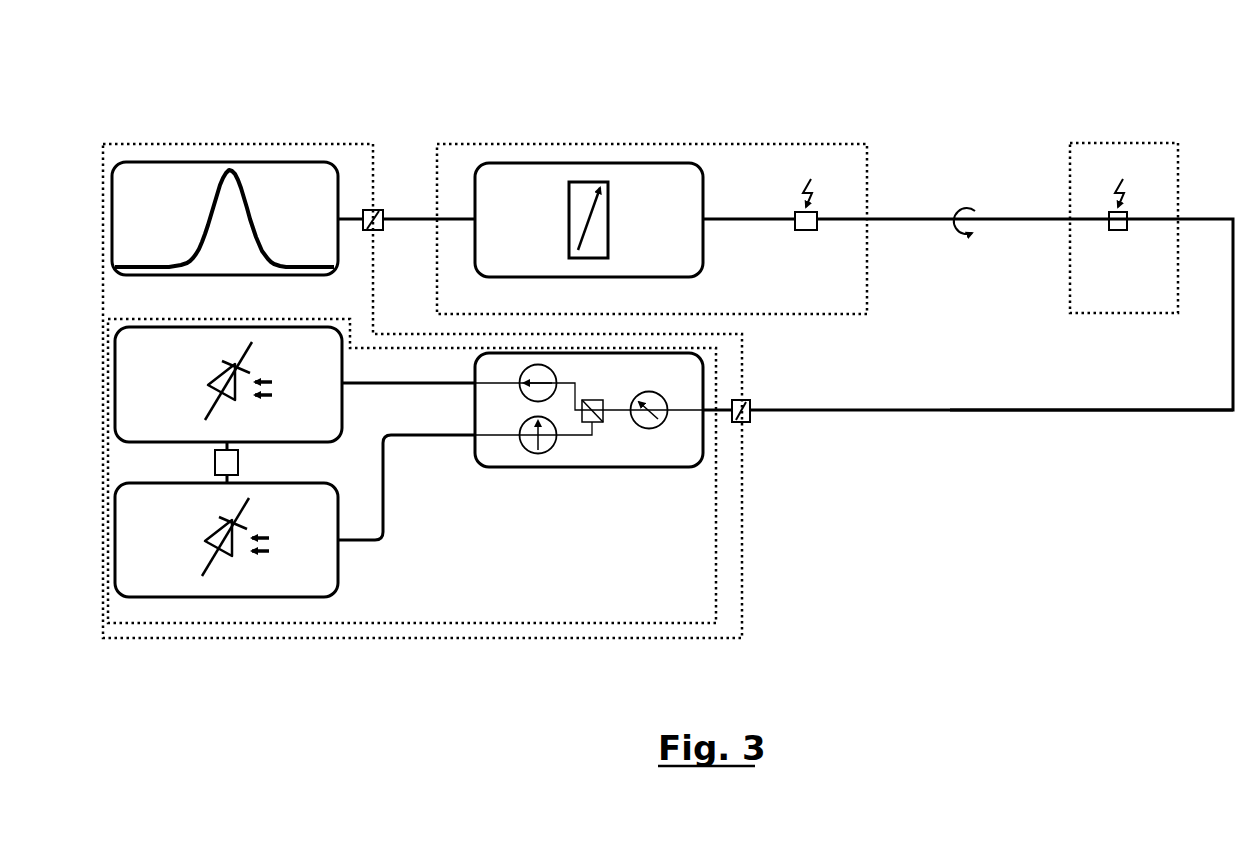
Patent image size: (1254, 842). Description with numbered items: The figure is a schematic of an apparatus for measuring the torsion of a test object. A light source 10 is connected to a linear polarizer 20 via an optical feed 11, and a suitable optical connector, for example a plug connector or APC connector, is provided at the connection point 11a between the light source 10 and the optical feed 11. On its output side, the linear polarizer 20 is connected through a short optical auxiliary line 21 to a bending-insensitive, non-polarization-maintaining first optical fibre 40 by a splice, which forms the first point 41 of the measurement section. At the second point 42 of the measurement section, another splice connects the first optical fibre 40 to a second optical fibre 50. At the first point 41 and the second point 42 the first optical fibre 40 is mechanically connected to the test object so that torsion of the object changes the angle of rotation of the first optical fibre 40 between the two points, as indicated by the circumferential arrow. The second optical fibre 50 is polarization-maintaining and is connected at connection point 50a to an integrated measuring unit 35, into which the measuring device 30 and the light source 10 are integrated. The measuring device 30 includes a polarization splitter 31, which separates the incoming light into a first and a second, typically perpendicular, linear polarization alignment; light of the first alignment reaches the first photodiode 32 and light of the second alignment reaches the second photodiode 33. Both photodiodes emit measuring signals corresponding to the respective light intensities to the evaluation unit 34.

The light source 10 is at (272, 163).
The optical feed 11 is at (443, 220).
The connection point 11a is at (378, 215).
The linear polarizer 20 is at (585, 163).
The optical auxiliary line 21 is at (737, 218).
The measuring device 30 is at (716, 542).
The polarization splitter 31 is at (560, 467).
The first photodiode 32 is at (342, 400).
The second photodiode 33 is at (338, 560).
The evaluation unit 34 is at (238, 457).
The integrated measuring unit 35 is at (742, 597).
The first optical fibre 40 is at (915, 219).
The first point 41 is at (815, 215).
The second point 42 is at (1127, 215).
The second optical fibre 50 is at (945, 410).
The connection point 50a is at (750, 412).